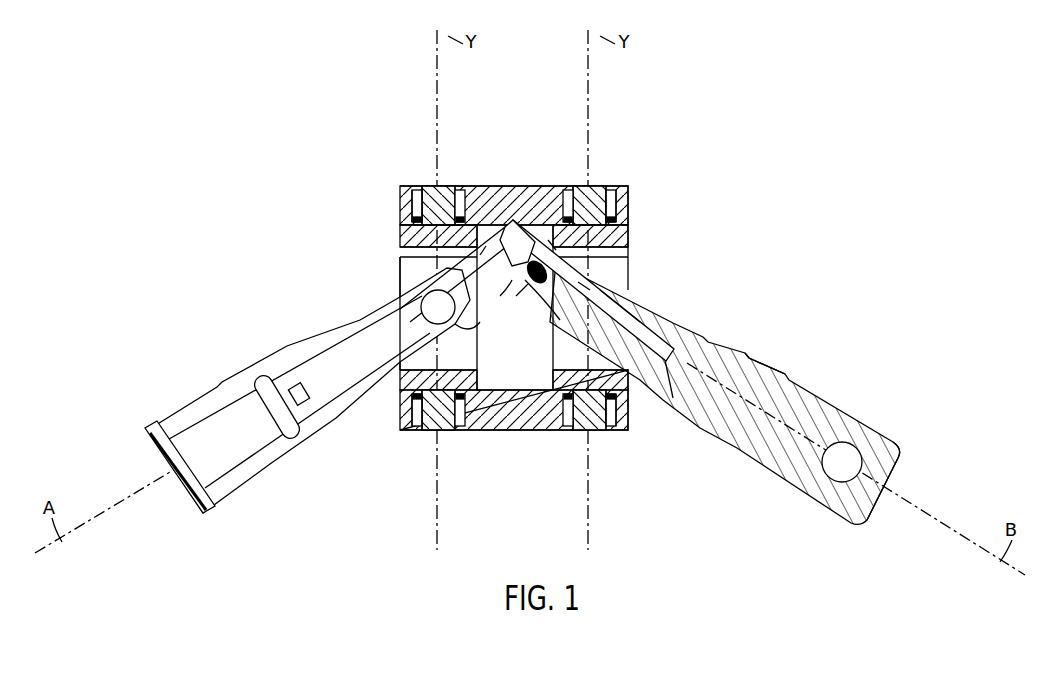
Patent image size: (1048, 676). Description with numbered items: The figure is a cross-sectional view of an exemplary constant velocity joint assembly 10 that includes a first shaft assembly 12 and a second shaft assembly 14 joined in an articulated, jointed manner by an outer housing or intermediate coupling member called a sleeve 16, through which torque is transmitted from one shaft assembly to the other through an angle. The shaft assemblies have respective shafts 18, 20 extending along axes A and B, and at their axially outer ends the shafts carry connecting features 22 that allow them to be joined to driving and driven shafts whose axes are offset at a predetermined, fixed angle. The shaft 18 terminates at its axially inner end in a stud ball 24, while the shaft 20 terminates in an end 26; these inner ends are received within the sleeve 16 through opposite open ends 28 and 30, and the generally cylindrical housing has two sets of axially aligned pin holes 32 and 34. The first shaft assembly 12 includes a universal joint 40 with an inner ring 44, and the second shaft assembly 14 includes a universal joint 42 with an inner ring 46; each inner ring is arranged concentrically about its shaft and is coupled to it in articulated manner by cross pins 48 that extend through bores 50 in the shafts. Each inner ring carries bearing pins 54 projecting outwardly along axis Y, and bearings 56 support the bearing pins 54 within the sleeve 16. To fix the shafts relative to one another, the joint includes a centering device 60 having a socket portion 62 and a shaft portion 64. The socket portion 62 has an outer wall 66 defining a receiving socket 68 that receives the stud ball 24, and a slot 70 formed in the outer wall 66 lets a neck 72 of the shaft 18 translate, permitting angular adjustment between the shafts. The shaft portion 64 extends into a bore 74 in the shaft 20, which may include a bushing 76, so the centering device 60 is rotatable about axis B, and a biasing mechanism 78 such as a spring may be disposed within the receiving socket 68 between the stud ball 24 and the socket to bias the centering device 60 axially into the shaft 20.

The constant velocity joint assembly 10 is at (736, 78).
The first shaft assembly 12 is at (395, 356).
The second shaft assembly 14 is at (725, 392).
The sleeve 16 is at (506, 196).
The shaft 18 is at (338, 420).
The shaft 20 is at (712, 425).
The connecting features 22 is at (150, 470).
The stud ball 24 is at (482, 250).
The end 26 is at (612, 292).
The open end 28 is at (396, 246).
The open end 30 is at (640, 236).
The pin holes 32 is at (412, 184).
The pin holes 34 is at (614, 184).
The universal joint 40 is at (397, 283).
The universal joint 42 is at (634, 284).
The inner ring 44 is at (413, 374).
The inner ring 46 is at (566, 376).
The cross pins 48 is at (424, 310).
The bores 50 is at (458, 314).
The bearing pins 54 is at (438, 205).
The bearings 56 is at (461, 194).
The centering device 60 is at (534, 322).
The socket portion 62 is at (556, 238).
The shaft portion 64 is at (660, 360).
The outer wall 66 is at (522, 236).
The receiving socket 68 is at (520, 298).
The slot 70 is at (500, 296).
The neck 72 is at (484, 256).
The bore 74 is at (742, 352).
The bushing 76 is at (586, 284).
The biasing mechanism 78 is at (559, 237).